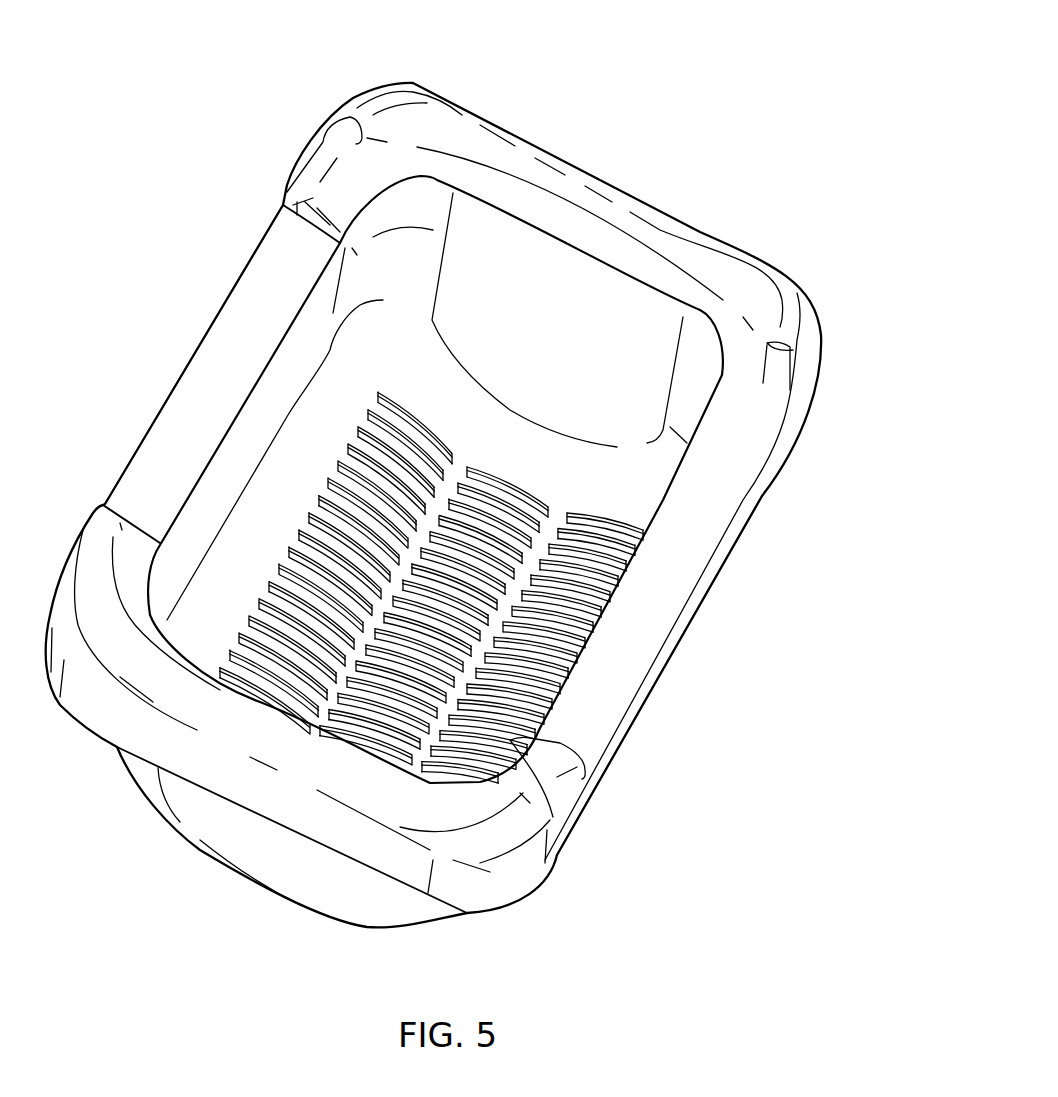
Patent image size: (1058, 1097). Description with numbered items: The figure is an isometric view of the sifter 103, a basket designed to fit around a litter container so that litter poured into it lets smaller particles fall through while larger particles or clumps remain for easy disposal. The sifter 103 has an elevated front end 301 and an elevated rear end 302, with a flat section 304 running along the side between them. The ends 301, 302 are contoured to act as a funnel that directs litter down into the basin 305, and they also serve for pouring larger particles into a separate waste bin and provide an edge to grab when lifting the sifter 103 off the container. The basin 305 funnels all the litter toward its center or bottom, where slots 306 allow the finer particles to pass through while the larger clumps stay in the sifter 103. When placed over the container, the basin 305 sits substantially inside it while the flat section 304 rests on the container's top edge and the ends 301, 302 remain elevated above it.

The sifter 103 is at (634, 78).
The front end 301 is at (243, 738).
The rear end 302 is at (580, 237).
The flat section 304 is at (693, 537).
The basin 305 is at (213, 353).
The slots 306 is at (596, 487).